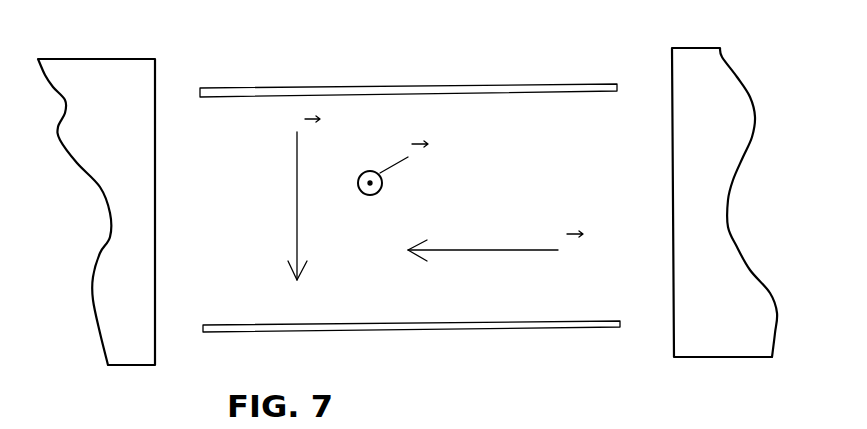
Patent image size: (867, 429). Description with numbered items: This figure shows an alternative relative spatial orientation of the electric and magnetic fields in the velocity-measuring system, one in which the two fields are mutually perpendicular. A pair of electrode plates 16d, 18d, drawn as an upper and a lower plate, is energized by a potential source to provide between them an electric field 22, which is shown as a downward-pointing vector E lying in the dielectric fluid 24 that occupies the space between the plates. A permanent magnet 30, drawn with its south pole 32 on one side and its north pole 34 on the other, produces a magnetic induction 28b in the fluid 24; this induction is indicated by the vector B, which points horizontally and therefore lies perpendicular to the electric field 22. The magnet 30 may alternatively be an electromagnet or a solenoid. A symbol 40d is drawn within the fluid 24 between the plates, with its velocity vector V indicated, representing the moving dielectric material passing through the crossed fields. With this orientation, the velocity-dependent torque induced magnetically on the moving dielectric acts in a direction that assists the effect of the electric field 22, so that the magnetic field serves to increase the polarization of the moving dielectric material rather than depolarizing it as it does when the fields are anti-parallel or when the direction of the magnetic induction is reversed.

The permanent magnet 30 is at (118, 54).
The south pole 32 is at (117, 109).
The north pole 34 is at (719, 115).
The electrode 16d is at (483, 84).
The electrode 18d is at (405, 329).
The dielectric fluid 24 is at (523, 141).
The electric field 22 is at (297, 180).
The magnetic induction 28b is at (517, 248).
The charged particle 40d is at (367, 195).